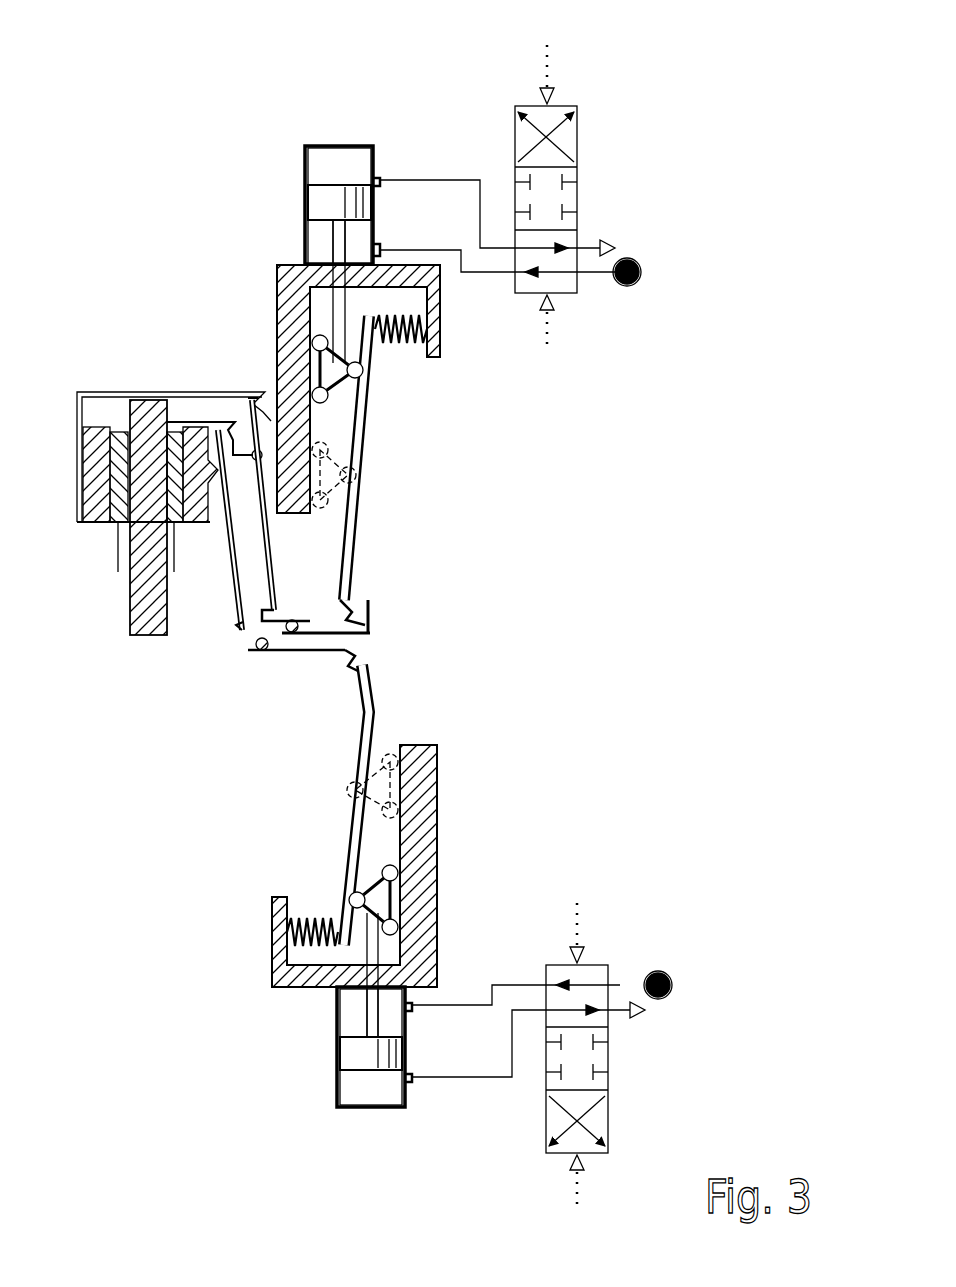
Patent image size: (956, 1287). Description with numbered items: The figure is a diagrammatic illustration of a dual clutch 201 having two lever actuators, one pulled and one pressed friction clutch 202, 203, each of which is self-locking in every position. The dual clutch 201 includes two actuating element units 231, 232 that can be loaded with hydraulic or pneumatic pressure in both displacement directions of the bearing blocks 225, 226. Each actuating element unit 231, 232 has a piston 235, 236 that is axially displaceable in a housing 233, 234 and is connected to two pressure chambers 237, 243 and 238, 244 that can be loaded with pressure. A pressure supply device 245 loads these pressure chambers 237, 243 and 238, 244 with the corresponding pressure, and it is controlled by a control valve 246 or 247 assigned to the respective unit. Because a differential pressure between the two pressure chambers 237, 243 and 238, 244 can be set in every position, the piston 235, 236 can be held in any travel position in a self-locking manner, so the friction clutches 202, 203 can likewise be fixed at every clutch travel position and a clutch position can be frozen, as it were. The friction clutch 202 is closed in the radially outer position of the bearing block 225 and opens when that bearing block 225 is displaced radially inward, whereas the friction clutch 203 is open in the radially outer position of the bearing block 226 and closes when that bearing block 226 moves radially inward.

The dual clutch 201 is at (655, 82).
The friction clutch 202 is at (72, 556).
The friction clutch 203 is at (199, 556).
The bearing block 225 is at (337, 375).
The bearing block 226 is at (375, 900).
The actuating element unit 231 is at (320, 154).
The actuating element unit 232 is at (326, 1089).
The housing 233 is at (305, 178).
The housing 234 is at (337, 1085).
The piston 235 is at (313, 205).
The piston 236 is at (348, 1050).
The pressure chamber 237 is at (350, 165).
The pressure chamber 238 is at (392, 1098).
The pressure chamber 243 is at (313, 242).
The pressure chamber 244 is at (348, 1005).
The pressure supply device 245 is at (641, 272).
The control valve 246 is at (570, 178).
The control valve 247 is at (598, 1055).